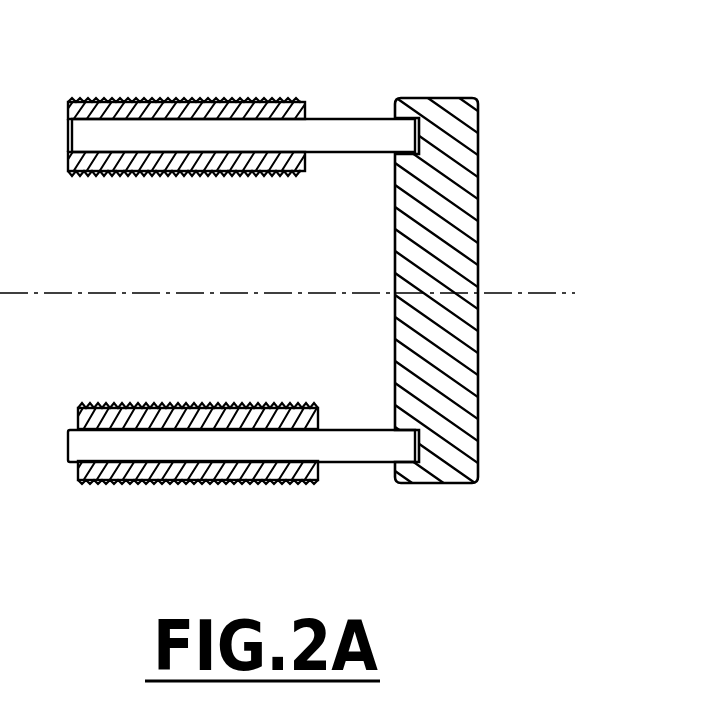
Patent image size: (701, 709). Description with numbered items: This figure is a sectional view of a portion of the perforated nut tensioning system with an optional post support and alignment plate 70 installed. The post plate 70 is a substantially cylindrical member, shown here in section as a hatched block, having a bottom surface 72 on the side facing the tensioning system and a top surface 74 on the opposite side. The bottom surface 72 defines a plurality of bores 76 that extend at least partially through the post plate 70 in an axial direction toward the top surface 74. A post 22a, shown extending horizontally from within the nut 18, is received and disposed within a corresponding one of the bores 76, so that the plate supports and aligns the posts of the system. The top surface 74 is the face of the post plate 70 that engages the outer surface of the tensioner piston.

The nut 18 is at (176, 100).
The post 22a is at (362, 98).
The post support and alignment plate 70 is at (478, 189).
The bottom surface 72 is at (395, 230).
The top surface 74 is at (478, 255).
The bore 76 is at (409, 462).